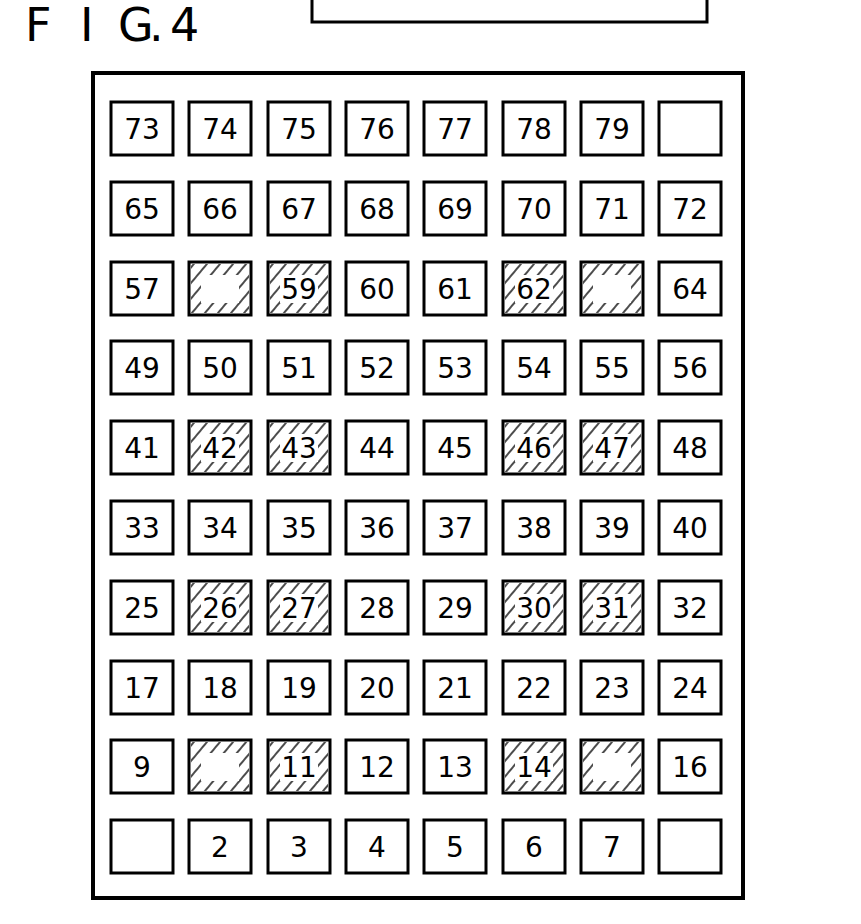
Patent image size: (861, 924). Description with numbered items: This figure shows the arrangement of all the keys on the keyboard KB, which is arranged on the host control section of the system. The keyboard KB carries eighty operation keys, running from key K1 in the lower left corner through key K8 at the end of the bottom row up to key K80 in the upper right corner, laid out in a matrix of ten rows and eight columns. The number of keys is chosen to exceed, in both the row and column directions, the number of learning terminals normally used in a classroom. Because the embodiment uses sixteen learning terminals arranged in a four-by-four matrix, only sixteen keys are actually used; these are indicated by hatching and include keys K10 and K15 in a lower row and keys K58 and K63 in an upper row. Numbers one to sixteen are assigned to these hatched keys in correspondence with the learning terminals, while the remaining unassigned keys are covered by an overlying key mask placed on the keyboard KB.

The keyboard KB is at (712, 410).
The operation key K1 is at (120, 841).
The operation key K8 is at (712, 850).
The operation key K10 is at (204, 791).
The operation key K15 is at (628, 792).
The operation key K58 is at (199, 266).
The operation key K63 is at (630, 267).
The operation key K80 is at (718, 131).